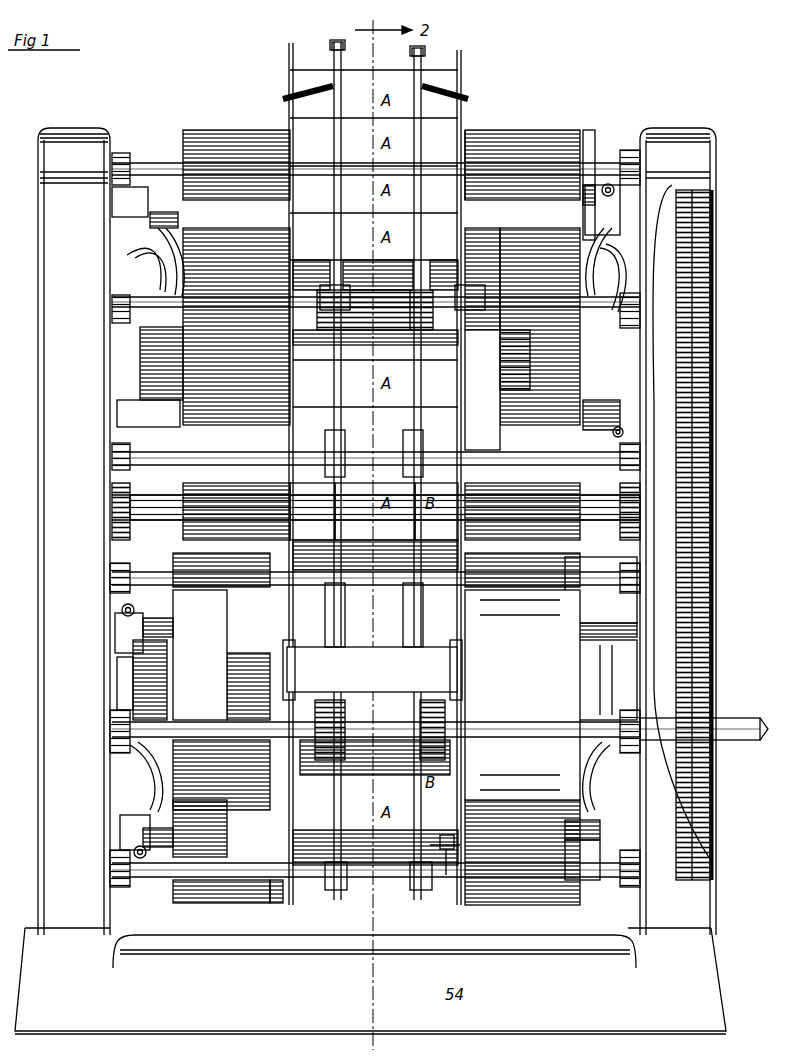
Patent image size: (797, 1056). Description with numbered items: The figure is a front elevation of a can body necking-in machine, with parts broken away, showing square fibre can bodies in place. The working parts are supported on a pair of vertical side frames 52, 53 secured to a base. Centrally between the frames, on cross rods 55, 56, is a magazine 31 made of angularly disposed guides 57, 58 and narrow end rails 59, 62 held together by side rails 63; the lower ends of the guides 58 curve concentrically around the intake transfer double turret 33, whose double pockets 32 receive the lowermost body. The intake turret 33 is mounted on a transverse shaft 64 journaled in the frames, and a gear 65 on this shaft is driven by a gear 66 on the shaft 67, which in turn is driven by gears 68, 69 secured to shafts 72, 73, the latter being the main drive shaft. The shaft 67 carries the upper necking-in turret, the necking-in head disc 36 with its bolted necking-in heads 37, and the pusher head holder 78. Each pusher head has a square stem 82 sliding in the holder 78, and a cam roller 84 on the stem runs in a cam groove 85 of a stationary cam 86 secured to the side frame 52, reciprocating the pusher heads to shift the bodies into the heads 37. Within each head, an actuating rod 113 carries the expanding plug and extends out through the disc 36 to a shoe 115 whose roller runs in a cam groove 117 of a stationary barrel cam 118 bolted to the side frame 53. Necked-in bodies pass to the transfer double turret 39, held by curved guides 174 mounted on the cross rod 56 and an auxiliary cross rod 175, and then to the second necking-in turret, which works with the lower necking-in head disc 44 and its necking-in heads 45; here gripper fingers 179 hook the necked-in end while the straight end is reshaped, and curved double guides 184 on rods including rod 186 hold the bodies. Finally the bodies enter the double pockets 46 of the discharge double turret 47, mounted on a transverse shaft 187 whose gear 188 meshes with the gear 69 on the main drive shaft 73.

The magazine 31 is at (450, 88).
The double pocket 32 is at (368, 282).
The intake transfer double turret 33 is at (418, 282).
The necking-in head disc 36 is at (552, 142).
The necking-in heads 37 is at (522, 130).
The transfer double turret 39 is at (312, 511).
The lower necking-in head disc 44 is at (188, 905).
The necking-in heads 45 is at (237, 921).
The double pocket 46 is at (333, 788).
The discharge double turret 47 is at (380, 708).
The side frame 52 is at (74, 531).
The side frame 53 is at (649, 494).
The cross rod 55 is at (588, 182).
The cross rod 56 is at (363, 462).
The angularly disposed guides 57 is at (337, 42).
The angularly disposed guides 58 is at (332, 47).
The end rail 59 is at (288, 92).
The end rail 62 is at (470, 130).
The side rails 63 is at (300, 99).
The transverse shaft 64 is at (536, 307).
The gear 65 is at (692, 346).
The gear 66 is at (712, 202).
The shaft 67 is at (470, 298).
The gear 68 is at (690, 553).
The gear 69 is at (712, 834).
The shaft 72 is at (180, 512).
The main drive shaft 73 is at (727, 720).
The pusher head holder 78 is at (210, 148).
The square stem 82 is at (158, 194).
The cam roller 84 is at (172, 224).
The cam groove 85 is at (178, 262).
The stationary cam 86 is at (128, 256).
The actuating rod 113 is at (594, 190).
The shoe 115 is at (370, 521).
The cam groove 117 is at (605, 256).
The stationary barrel cam 118 is at (596, 278).
The curved guides 174 is at (430, 493).
The auxiliary cross rod 175 is at (508, 580).
The gripper fingers 179 is at (450, 852).
The curved double guides 184 is at (414, 880).
The rod 186 is at (296, 870).
The transverse shaft 187 is at (482, 725).
The gear 188 is at (700, 780).